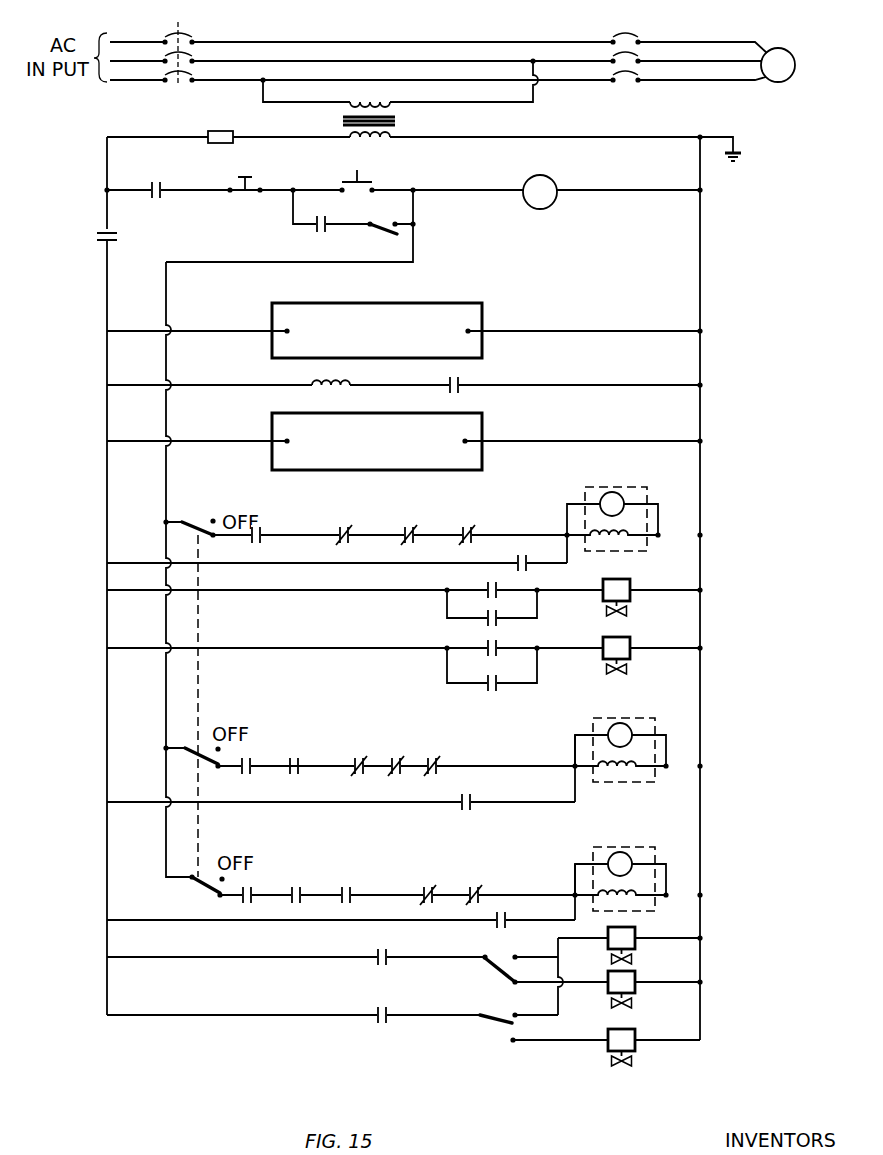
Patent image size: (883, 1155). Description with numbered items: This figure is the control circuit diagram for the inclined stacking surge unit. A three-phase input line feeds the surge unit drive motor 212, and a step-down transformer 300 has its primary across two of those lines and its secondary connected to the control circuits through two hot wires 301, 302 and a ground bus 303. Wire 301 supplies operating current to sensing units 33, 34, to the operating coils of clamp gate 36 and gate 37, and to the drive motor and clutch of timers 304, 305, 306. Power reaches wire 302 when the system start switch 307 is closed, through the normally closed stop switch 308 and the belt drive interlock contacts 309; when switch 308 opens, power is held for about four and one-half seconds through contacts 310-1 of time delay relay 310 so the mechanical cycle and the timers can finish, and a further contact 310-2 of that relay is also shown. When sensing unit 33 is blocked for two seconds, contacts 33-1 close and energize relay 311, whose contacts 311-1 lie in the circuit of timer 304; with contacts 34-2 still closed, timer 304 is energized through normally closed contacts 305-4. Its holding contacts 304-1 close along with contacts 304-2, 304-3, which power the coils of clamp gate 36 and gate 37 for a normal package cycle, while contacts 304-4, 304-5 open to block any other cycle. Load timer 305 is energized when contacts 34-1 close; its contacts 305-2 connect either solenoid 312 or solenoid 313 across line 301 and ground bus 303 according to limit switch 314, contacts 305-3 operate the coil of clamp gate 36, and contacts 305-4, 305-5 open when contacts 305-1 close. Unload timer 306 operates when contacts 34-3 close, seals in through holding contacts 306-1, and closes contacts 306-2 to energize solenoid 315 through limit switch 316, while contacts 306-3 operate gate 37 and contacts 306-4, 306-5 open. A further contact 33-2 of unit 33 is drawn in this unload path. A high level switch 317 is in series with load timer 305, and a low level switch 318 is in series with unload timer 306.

The surge unit drive motor 212 is at (776, 48).
The step-down transformer 300 is at (390, 136).
The hot wire 301 is at (107, 172).
The hot wire 302 is at (237, 260).
The ground bus 303 is at (700, 227).
The timer 304 is at (610, 487).
The timer 305 is at (603, 733).
The timer 306 is at (620, 850).
The system start switch 307 is at (360, 175).
The stop switch 308 is at (247, 185).
The belt drive interlock contacts 309 is at (161, 188).
The time delay relay 310 is at (553, 180).
The contacts 310-1 is at (303, 763).
The contact 310-2 is at (104, 242).
The relay 311 is at (310, 383).
The contacts 311-1 is at (268, 531).
The sensing unit 33 is at (365, 341).
The sensing unit 34 is at (365, 452).
The contacts 33-1 is at (462, 383).
The contact 33-2 is at (303, 890).
The normally open contacts 34-1 is at (243, 771).
The contacts 34-2 is at (342, 528).
The contacts 34-3 is at (253, 890).
The holding contacts 304-1 is at (530, 548).
The contacts 304-2 is at (487, 584).
The contacts 304-3 is at (485, 648).
The contacts 304-4 is at (372, 727).
The contacts 304-5 is at (462, 858).
The contacts 305-1 is at (470, 808).
The timer contacts 305-2 is at (375, 955).
The contacts 305-3 is at (487, 686).
The normally closed contacts 305-4 is at (430, 514).
The contacts 305-5 is at (480, 892).
The holding contacts 306-1 is at (495, 925).
The contacts 306-2 is at (390, 1011).
The contacts 306-3 is at (534, 627).
The contacts 306-4 is at (472, 530).
The contacts 306-5 is at (398, 758).
The gate 37 is at (630, 583).
The clamp gate 36 is at (630, 641).
The solenoid 312 is at (635, 977).
The solenoid 313 is at (635, 933).
The solenoid 315 is at (635, 1035).
The limit switch 314 is at (493, 972).
The limit switch 316 is at (492, 1024).
The high level switch 317 is at (440, 760).
The low level switch 318 is at (365, 873).